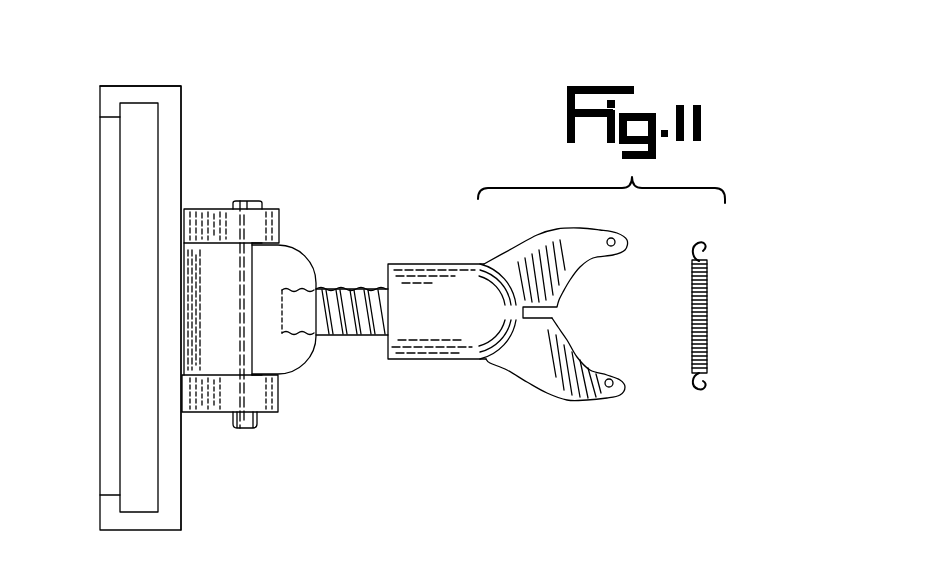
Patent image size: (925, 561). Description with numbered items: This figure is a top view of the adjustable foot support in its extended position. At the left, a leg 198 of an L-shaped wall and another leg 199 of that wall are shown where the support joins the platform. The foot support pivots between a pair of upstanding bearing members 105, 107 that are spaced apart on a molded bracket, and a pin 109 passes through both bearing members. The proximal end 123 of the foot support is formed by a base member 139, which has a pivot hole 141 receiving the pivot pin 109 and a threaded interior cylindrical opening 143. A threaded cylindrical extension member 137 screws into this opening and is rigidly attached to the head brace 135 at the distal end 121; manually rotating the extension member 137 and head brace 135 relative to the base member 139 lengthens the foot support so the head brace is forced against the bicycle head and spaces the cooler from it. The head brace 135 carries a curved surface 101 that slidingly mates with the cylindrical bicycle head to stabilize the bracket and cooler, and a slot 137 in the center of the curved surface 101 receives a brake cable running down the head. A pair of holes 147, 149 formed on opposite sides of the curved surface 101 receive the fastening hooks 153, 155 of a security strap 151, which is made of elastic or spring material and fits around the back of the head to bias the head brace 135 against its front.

The leg 198 is at (100, 88).
The leg 199 is at (162, 82).
The upstanding bearing member 105 is at (200, 208).
The upstanding bearing member 107 is at (210, 393).
The proximal end 123 is at (207, 320).
The pivot hole 141 is at (258, 268).
The pivot pin 109 is at (252, 290).
The base member 139 is at (277, 357).
The threaded interior cylindrical opening 143 is at (330, 250).
The threaded cylindrical extension member 137 is at (362, 290).
The head brace 135 is at (527, 360).
The curved surface 101 is at (567, 278).
The hole 149 is at (615, 241).
The hole 147 is at (618, 392).
The security strap 151 is at (707, 340).
The fastening hook 153 is at (703, 241).
The fastening hook 155 is at (703, 387).
The distal end 121 is at (581, 434).